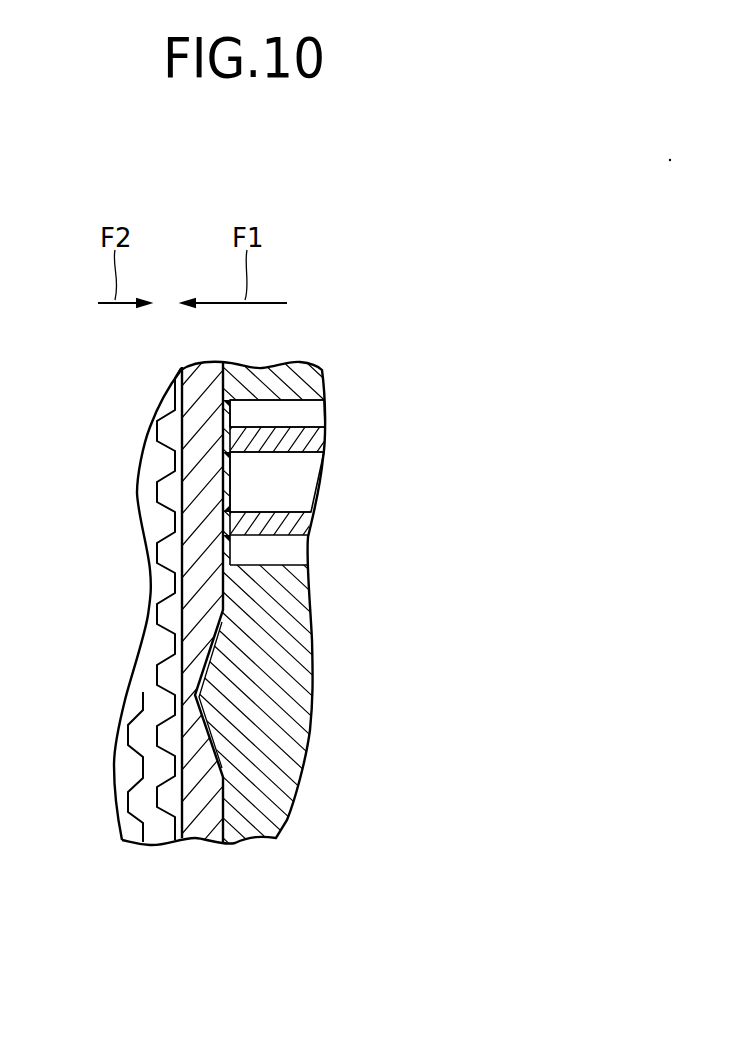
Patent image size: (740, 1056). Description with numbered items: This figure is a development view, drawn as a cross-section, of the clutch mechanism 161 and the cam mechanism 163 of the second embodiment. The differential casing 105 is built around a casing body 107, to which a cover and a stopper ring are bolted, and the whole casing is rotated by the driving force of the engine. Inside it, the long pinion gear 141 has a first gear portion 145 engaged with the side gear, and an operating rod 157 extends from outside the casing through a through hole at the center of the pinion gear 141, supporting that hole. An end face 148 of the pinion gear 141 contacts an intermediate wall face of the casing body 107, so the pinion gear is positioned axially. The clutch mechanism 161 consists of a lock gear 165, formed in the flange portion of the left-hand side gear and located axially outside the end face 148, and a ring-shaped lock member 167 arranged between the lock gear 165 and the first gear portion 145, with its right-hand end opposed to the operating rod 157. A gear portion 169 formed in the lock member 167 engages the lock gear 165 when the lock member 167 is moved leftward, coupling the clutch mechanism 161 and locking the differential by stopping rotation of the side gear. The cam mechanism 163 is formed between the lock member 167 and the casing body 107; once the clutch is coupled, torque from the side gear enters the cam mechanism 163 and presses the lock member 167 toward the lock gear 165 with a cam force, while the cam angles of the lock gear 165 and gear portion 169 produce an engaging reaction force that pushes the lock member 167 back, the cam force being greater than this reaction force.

The casing body 107 is at (297, 607).
The differential casing 105 is at (297, 607).
The cam mechanism 163 is at (288, 694).
The first gear portion 145 is at (351, 379).
The long pinion gear 141 is at (285, 408).
The operating rod 157 is at (296, 483).
The end face 148 is at (224, 420).
The clutch mechanism 161 is at (179, 647).
The lock gear 165 is at (137, 647).
The gear portion 169 is at (166, 810).
The lock member 167 is at (203, 828).